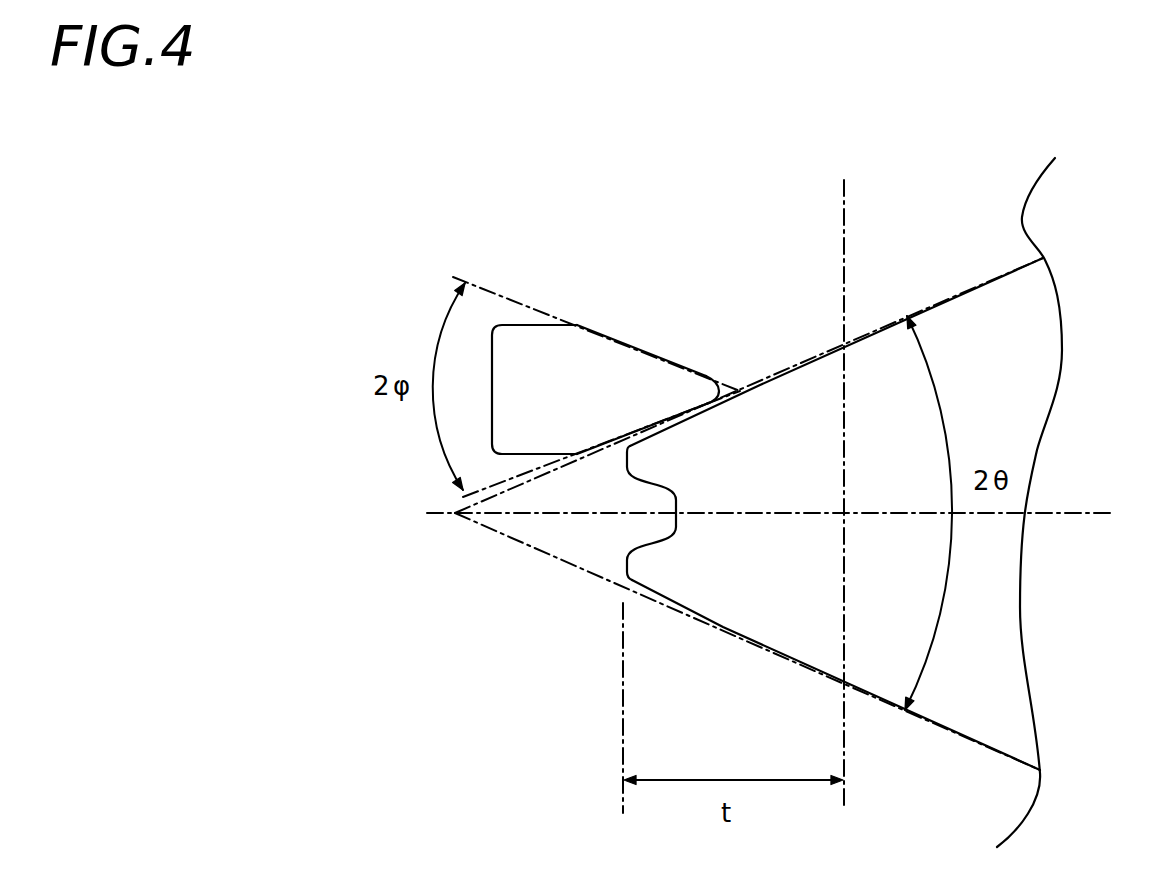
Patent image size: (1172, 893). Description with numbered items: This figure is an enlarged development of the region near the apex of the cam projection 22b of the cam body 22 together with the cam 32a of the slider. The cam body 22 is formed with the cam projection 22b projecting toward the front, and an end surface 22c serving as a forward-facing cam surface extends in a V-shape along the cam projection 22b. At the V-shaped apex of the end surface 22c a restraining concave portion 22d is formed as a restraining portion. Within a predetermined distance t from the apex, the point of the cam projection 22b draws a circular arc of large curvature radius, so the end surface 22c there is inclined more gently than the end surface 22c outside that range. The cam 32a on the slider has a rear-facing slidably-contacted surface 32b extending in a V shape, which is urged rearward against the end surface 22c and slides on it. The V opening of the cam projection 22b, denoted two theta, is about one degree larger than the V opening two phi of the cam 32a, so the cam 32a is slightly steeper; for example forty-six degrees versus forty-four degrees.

The cam body 22 is at (962, 318).
The cam projection 22b is at (1002, 645).
The end surface 22c is at (880, 703).
The restraining concave portion 22d is at (657, 527).
The cam 32a is at (605, 356).
The slidably-contacted surface 32b is at (688, 365).